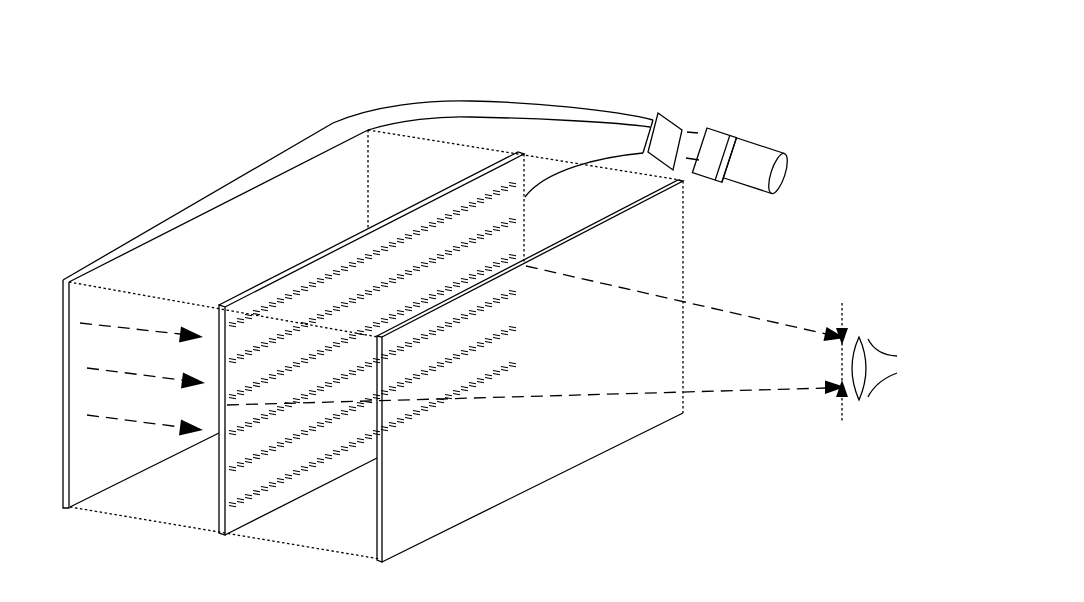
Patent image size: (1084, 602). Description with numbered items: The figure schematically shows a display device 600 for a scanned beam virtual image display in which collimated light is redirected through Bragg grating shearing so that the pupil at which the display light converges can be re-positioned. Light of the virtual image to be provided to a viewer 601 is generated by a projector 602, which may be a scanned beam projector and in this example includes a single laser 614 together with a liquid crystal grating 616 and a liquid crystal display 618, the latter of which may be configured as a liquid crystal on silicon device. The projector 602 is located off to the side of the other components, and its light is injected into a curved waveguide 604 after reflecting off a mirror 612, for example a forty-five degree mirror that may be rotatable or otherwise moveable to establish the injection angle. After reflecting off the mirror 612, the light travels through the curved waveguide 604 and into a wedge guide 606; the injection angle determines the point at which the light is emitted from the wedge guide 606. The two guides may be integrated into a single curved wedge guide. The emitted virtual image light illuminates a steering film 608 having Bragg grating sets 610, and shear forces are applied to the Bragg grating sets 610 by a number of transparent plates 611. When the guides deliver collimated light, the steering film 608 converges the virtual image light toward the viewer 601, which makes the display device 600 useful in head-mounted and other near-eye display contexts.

The display device 600 is at (531, 30).
The viewer 601 is at (871, 339).
The projector 602 is at (782, 172).
The curved waveguide 604 is at (489, 101).
The wedge guide 606 is at (338, 146).
The steering film 608 is at (218, 513).
The Bragg grating sets 610 is at (293, 436).
The transparent plates 611 is at (377, 551).
The mirror 612 is at (670, 120).
The laser 614 is at (769, 190).
The liquid crystal grating 616 is at (737, 137).
The liquid crystal display 618 is at (703, 177).